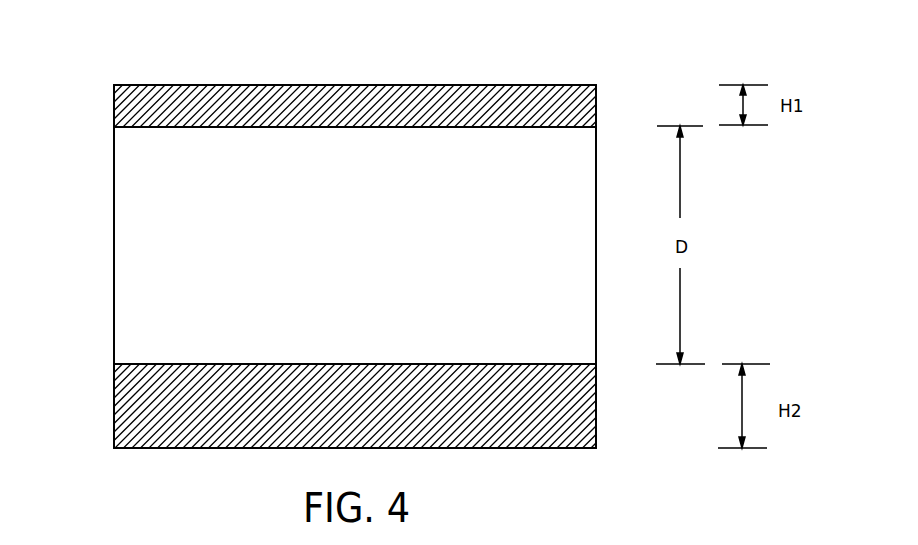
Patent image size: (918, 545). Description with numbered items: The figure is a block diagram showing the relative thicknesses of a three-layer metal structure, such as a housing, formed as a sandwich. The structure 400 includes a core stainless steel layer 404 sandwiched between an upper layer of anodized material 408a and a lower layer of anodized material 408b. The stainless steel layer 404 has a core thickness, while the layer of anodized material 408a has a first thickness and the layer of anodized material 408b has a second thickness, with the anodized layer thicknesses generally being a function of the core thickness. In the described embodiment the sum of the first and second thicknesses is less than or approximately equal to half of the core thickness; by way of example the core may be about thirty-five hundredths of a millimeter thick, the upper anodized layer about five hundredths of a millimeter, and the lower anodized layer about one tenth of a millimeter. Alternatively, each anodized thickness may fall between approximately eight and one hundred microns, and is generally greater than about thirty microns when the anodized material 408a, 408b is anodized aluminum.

The structure 400 is at (82, 28).
The core stainless steel layer 404 is at (596, 241).
The layer of anodized material 408a is at (596, 91).
The layer of anodized material 408b is at (596, 392).